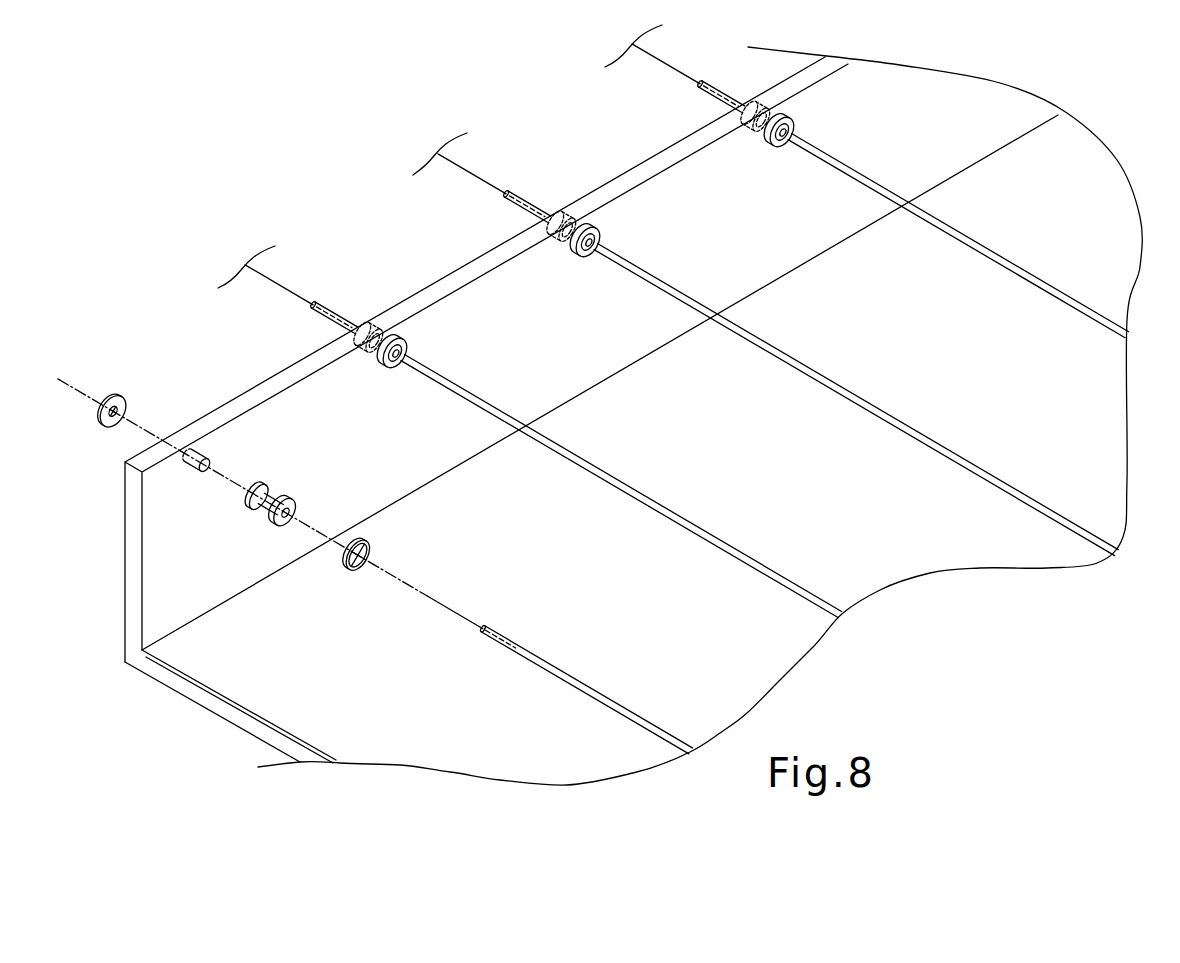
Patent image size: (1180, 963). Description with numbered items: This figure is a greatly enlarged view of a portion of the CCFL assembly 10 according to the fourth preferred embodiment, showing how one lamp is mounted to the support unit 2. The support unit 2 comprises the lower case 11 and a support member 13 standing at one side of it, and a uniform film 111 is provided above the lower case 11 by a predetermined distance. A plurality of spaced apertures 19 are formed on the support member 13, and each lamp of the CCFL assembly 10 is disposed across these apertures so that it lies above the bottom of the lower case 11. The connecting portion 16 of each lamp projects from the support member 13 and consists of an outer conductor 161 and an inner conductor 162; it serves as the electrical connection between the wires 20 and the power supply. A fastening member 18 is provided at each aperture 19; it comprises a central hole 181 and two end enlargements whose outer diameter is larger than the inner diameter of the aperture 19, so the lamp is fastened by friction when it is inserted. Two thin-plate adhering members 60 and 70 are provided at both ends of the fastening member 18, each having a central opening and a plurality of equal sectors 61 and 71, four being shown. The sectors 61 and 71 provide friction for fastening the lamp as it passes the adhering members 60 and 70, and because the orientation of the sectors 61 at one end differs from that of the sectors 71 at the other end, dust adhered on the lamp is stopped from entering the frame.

The support unit 2 is at (543, 410).
The CCFL assembly 10 is at (588, 476).
The lower case 11 is at (204, 706).
The uniform film 111 is at (252, 690).
The support member 13 is at (293, 413).
The connecting portion 16 is at (751, 322).
The outer conductor 161 is at (498, 192).
The inner conductor 162 is at (528, 195).
The fastening member 18 is at (344, 547).
The central hole 181 is at (297, 510).
The aperture 19 is at (213, 460).
The wire 20 is at (413, 175).
The adhering member 60 is at (142, 368).
The sector 61 is at (127, 408).
The adhering member 70 is at (401, 594).
The sector 71 is at (350, 570).